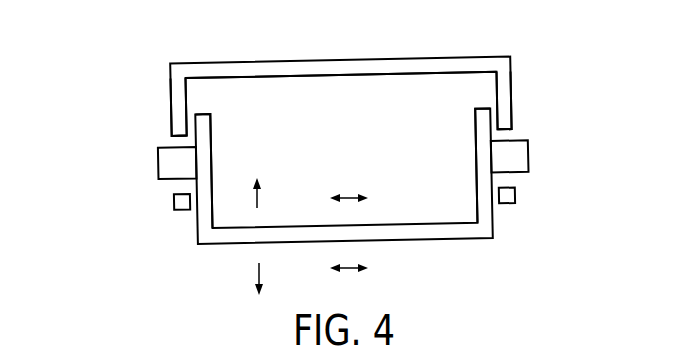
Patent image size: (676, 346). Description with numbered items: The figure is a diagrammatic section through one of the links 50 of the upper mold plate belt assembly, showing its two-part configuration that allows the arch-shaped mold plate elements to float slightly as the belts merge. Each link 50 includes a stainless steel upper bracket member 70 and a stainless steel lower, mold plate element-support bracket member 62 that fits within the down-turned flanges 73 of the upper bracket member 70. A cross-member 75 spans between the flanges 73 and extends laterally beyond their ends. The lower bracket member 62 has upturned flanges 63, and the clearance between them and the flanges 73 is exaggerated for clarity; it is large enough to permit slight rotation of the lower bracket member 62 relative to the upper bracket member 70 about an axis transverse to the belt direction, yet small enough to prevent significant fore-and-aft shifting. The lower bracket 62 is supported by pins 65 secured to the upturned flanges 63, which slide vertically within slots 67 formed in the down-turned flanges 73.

The link 50 is at (308, 152).
The lower mold plate element-support bracket member 62 is at (393, 235).
The upturned flanges 63 is at (203, 130).
The pins 65 is at (165, 163).
The slots 67 is at (177, 143).
The upper bracket member 70 is at (350, 59).
The down-turned flanges 73 is at (177, 107).
The cross-member 75 is at (432, 65).